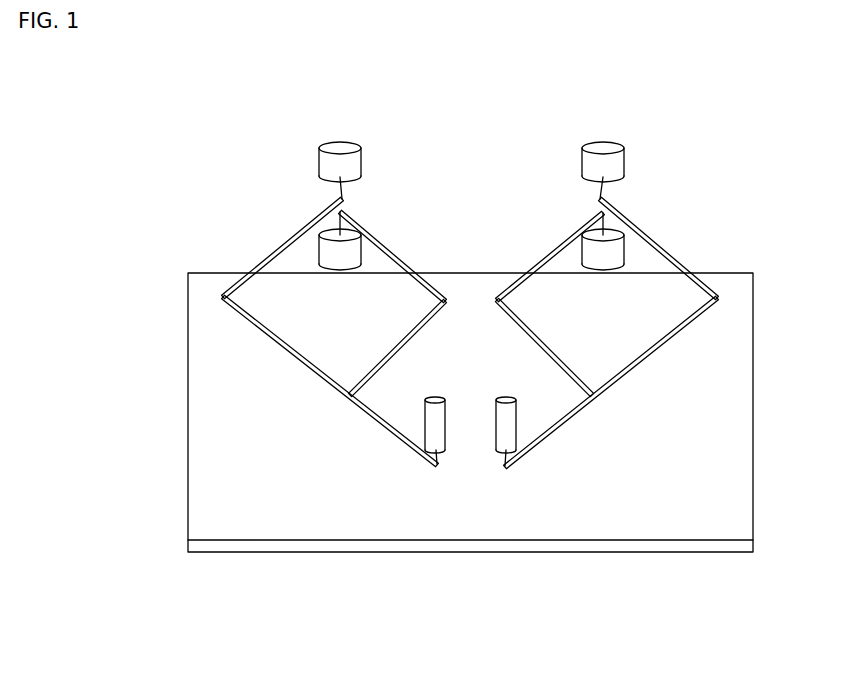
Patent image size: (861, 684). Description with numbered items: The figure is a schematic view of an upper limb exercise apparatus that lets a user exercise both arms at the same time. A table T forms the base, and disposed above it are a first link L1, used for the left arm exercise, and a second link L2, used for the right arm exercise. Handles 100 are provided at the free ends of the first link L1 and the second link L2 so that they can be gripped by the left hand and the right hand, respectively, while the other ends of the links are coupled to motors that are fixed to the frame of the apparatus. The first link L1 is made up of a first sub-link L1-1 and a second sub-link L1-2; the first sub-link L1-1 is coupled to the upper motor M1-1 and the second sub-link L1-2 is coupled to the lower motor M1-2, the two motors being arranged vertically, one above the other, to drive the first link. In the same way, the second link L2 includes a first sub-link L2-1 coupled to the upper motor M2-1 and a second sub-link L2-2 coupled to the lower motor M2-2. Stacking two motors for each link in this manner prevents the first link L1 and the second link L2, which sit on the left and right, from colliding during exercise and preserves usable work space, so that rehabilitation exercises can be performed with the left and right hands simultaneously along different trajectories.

The table T is at (237, 500).
The handles 100 is at (438, 457).
The first link L1 is at (289, 291).
The 1-1 link L1-1 is at (267, 258).
The 1-2 link L1-2 is at (387, 247).
The upper motor M1-1 is at (325, 163).
The lower motor M1-2 is at (328, 252).
The second link L2 is at (655, 292).
The 2-1 link L2-1 is at (680, 258).
The 2-2 link L2-2 is at (558, 248).
The upper motor M2-1 is at (618, 163).
The lower motor M2-2 is at (615, 252).